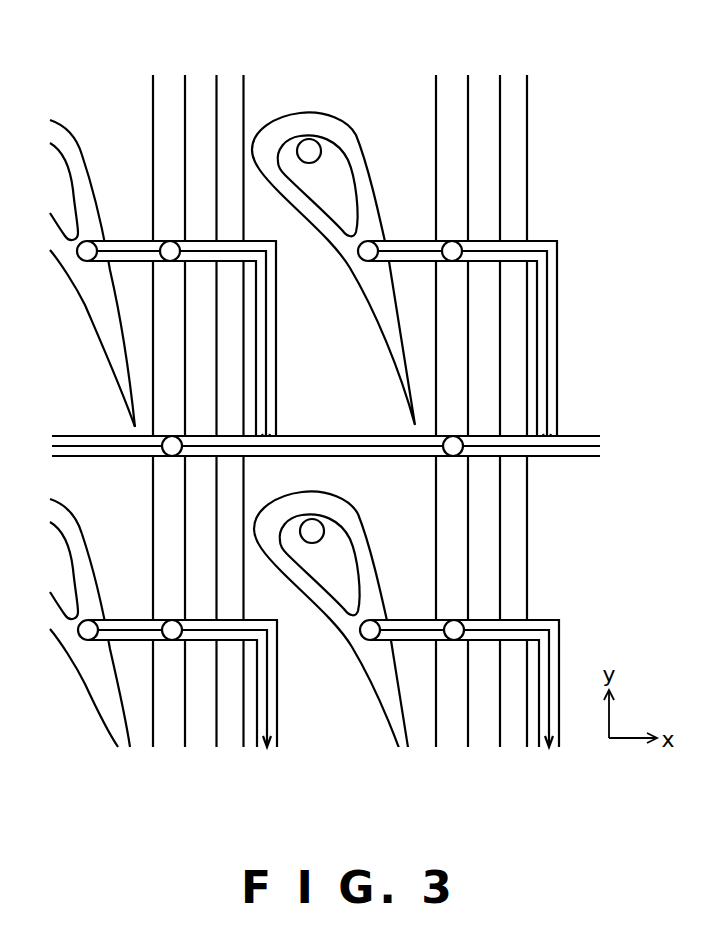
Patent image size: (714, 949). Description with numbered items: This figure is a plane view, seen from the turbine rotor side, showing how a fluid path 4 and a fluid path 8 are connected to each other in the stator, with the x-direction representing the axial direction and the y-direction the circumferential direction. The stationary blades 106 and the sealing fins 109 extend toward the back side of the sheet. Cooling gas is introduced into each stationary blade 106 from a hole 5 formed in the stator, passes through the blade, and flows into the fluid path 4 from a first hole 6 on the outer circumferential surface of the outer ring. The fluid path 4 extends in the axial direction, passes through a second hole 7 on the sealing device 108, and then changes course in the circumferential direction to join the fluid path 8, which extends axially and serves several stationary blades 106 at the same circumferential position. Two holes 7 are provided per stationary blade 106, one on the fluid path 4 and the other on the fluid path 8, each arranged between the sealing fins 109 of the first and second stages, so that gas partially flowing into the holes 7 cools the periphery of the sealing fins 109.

The fluid path 4 is at (412, 262).
The hole 5 is at (307, 150).
The first hole 6 is at (366, 252).
The second hole 7 is at (167, 243).
The fluid path 8 is at (551, 458).
The stationary blade 106 is at (366, 157).
The sealing device 108 is at (384, 384).
The sealing fin 109 is at (528, 115).